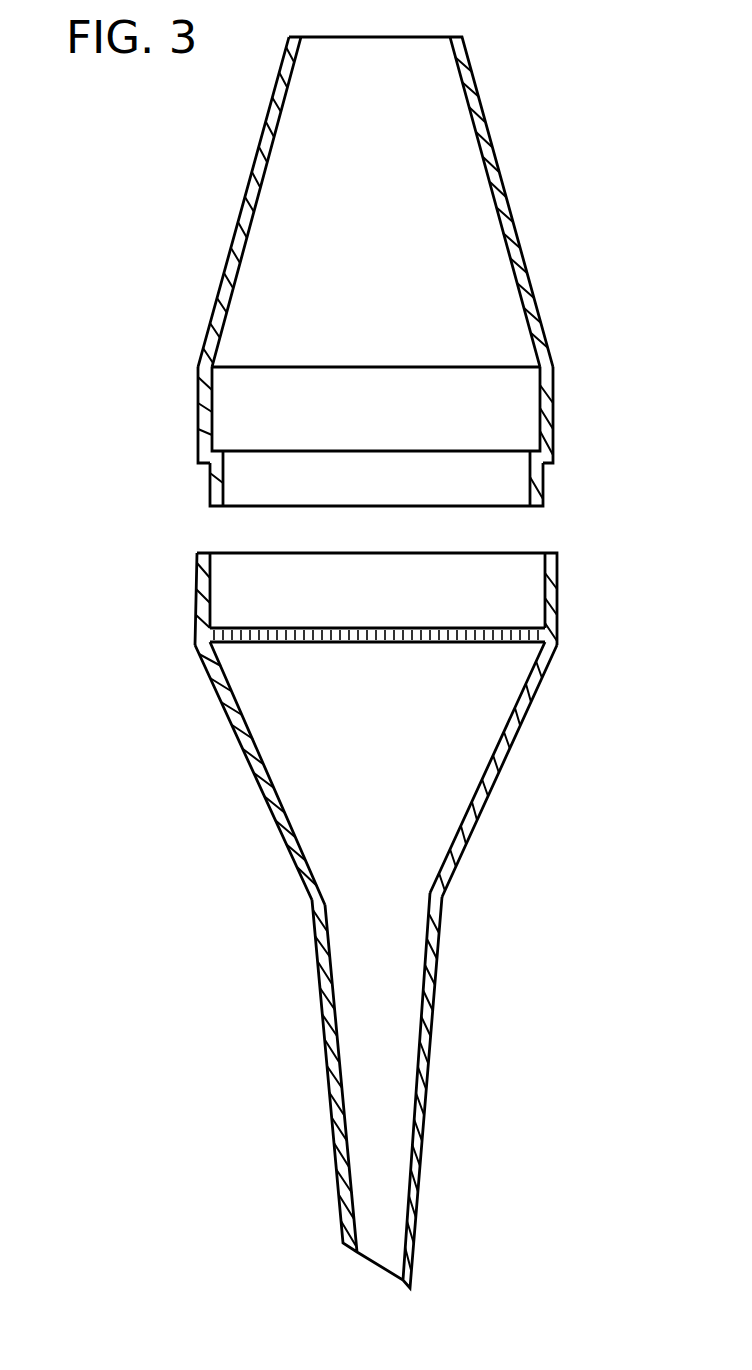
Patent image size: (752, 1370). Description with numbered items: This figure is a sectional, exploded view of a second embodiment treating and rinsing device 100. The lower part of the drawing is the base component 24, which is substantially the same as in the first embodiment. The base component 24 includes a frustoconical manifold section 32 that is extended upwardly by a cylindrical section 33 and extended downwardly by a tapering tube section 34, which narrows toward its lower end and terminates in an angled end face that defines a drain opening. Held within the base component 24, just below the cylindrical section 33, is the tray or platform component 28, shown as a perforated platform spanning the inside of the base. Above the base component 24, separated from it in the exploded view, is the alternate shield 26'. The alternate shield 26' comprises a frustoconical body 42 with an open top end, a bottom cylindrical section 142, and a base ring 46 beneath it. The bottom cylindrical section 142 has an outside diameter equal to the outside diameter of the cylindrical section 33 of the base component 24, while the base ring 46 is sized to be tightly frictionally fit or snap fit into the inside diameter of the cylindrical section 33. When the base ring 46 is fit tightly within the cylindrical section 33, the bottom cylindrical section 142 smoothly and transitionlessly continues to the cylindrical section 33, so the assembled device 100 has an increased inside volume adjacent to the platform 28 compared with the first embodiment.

The second embodiment treating and rinsing device 100 is at (417, 271).
The alternate shield 26' is at (417, 271).
The frustoconical body 42 is at (514, 224).
The bottom cylindrical section 142 is at (553, 404).
The base ring 46 is at (544, 489).
The base component 24 is at (410, 920).
The cylindrical section 33 is at (556, 592).
The platform component 28 is at (324, 627).
The frustoconical manifold section 32 is at (523, 723).
The tapering tube section 34 is at (434, 1036).